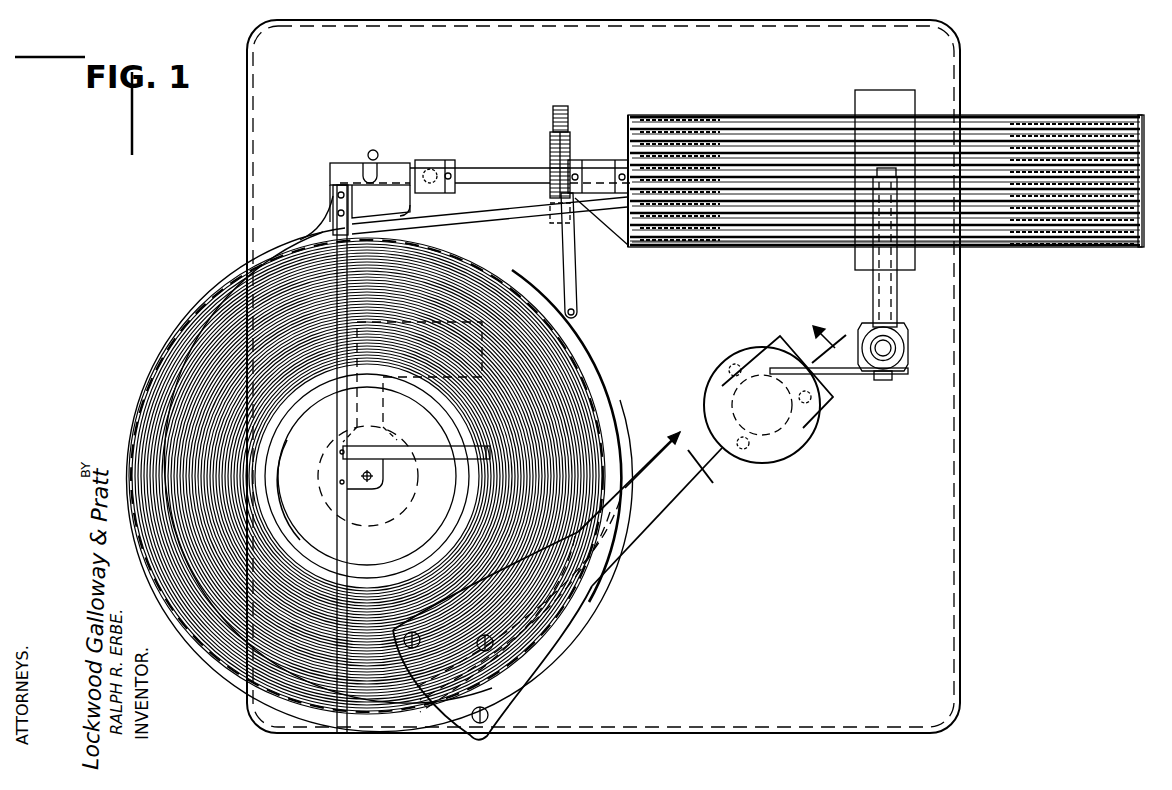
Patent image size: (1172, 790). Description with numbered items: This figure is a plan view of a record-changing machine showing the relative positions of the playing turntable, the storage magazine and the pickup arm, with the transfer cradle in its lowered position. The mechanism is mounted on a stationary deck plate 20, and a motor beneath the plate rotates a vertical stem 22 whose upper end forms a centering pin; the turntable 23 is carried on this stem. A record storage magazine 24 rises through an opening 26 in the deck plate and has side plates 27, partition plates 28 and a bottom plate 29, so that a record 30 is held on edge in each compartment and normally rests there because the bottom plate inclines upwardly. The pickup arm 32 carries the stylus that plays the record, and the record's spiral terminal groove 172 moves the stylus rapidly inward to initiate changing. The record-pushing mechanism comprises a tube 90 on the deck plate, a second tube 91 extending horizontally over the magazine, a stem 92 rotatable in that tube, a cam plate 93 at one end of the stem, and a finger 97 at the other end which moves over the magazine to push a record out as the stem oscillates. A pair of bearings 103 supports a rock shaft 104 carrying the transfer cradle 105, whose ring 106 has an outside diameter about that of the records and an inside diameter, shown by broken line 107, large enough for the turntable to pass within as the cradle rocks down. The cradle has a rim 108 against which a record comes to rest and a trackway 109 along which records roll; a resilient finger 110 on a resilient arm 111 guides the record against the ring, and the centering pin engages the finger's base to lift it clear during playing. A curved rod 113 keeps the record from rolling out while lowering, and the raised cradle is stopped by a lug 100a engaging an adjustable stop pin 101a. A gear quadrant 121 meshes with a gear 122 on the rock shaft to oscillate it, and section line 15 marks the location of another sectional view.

The deck plate 20 is at (957, 571).
The turntable 23 is at (570, 403).
The stem 22 is at (368, 476).
The record storage magazine 24 is at (1128, 250).
The opening 26 is at (896, 90).
The side plates 27 is at (1033, 116).
The partition plates 28 is at (630, 124).
The bottom plate 29 is at (1143, 206).
The record 30 is at (718, 122).
The pickup arm 32 is at (642, 532).
The section line 15 is at (738, 404).
The tube 90 is at (904, 352).
The second tube 91 is at (898, 303).
The stem 92 is at (888, 380).
The cam plate 93 is at (852, 376).
The finger 97 is at (897, 176).
The lug 100a is at (381, 165).
The adjustable stop pin 101a is at (375, 150).
The bearings 103 is at (430, 160).
The rock shaft 104 is at (484, 168).
The transfer cradle 105 is at (358, 195).
The ring 106 is at (594, 358).
The inside diameter of ring 107 is at (198, 338).
The rim 108 is at (132, 392).
The trackway 109 is at (493, 212).
The resilient finger 110 is at (446, 462).
The resilient arm 111 is at (346, 548).
The curved rod 113 is at (578, 294).
The gear quadrant 121 is at (556, 107).
The gear 122 is at (552, 165).
The terminal groove 172 is at (283, 505).